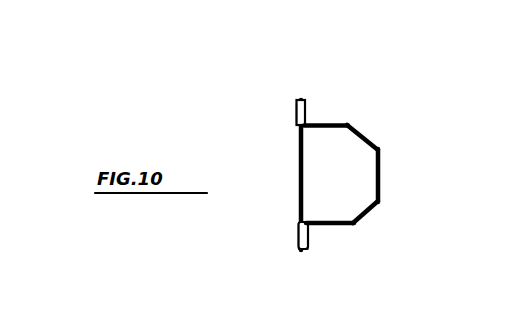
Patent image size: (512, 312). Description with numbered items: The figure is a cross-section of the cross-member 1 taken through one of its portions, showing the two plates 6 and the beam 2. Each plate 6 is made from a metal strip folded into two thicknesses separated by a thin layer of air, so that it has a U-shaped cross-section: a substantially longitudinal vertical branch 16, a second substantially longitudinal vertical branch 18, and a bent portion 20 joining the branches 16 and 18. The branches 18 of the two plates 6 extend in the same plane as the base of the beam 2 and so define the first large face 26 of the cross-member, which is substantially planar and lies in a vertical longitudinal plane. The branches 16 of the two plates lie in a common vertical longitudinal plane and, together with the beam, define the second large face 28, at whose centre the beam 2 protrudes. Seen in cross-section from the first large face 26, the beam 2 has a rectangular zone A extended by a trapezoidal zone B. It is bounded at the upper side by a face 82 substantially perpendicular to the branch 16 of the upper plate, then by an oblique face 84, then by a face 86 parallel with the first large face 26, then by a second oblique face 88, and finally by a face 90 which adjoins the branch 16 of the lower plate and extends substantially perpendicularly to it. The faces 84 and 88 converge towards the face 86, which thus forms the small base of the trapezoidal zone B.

The panel profile assembly 1 is at (232, 75).
The beam 2 is at (410, 145).
The plate 6 is at (287, 92).
The branch 16 is at (307, 110).
The branch 18 is at (296, 118).
The bent portion 20 is at (301, 99).
The first large face 26 is at (290, 152).
The second large face 28 is at (387, 101).
The face 82 is at (334, 123).
The oblique face 84 is at (367, 132).
The face 86 is at (380, 171).
The second oblique face 88 is at (368, 209).
The face 90 is at (330, 226).
The rectangular zone A is at (304, 181).
The trapezoidal zone B is at (376, 180).